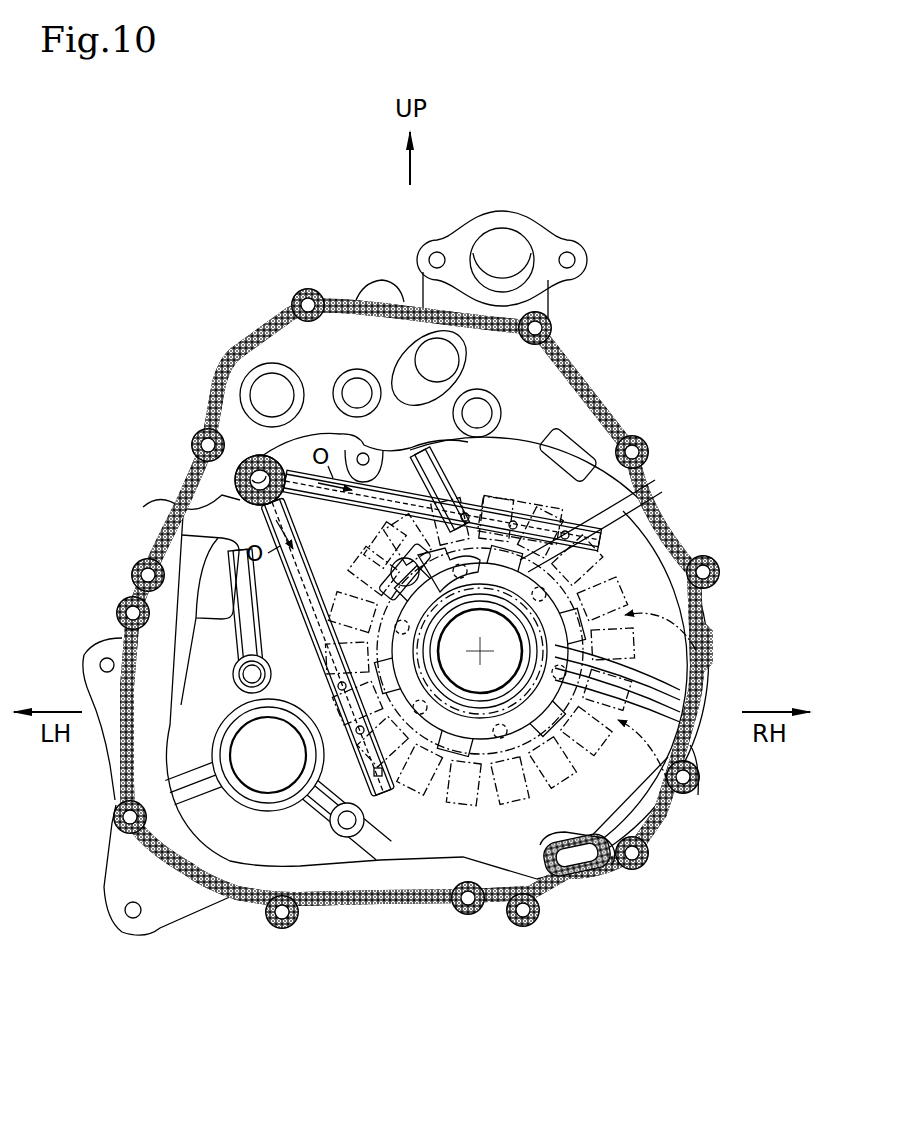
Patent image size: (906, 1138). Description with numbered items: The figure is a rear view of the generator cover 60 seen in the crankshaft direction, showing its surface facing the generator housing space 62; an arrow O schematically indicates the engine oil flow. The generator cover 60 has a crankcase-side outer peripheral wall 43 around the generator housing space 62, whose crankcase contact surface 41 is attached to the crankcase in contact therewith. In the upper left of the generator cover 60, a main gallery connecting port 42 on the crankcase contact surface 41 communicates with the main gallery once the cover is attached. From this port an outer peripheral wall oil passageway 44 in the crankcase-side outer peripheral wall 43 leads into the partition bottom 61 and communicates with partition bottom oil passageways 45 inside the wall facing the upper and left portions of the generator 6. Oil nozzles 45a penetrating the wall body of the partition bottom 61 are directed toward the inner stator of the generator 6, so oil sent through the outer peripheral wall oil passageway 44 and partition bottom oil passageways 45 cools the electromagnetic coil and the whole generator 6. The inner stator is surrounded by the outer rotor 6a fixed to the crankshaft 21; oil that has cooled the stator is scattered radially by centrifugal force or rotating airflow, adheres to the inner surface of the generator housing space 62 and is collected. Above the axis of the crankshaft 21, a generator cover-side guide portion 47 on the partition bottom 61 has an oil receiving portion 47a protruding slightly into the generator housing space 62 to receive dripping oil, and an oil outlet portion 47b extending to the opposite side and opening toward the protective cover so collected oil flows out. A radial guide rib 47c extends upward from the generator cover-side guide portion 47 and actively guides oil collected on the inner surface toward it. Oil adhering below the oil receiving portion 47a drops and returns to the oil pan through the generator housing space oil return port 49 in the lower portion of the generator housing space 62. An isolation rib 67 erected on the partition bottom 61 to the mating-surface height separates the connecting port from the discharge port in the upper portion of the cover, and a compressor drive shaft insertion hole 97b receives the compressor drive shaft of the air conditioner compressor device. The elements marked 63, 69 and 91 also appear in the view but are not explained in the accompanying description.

The generator cover 60 is at (431, 592).
The crankcase contact surface 41 is at (255, 470).
The main gallery connecting port 42 is at (250, 478).
The outer peripheral wall oil passageway 44 is at (212, 480).
The crankcase-side outer peripheral wall 43 is at (598, 440).
The partition bottom oil passageway 45 is at (478, 610).
The oil nozzles 45a is at (505, 522).
The generator cover-side guide portion 47 is at (401, 555).
The oil receiving portion 47a is at (436, 594).
The oil outlet portion 47b is at (400, 566).
The radial guide rib 47c is at (438, 474).
The shaft insertion hole 63 is at (450, 628).
The isolation rib 67 is at (432, 348).
The crankshaft 21 is at (493, 667).
The motor 91 is at (479, 650).
The generator 6 is at (740, 659).
The outer rotor 6a is at (712, 658).
The partition bottom 61 is at (506, 847).
The generator housing space 62 is at (700, 762).
The seal loop portion 69 is at (570, 866).
The generator housing space oil return port 49 is at (592, 864).
The compressor drive shaft insertion hole 97b is at (276, 792).